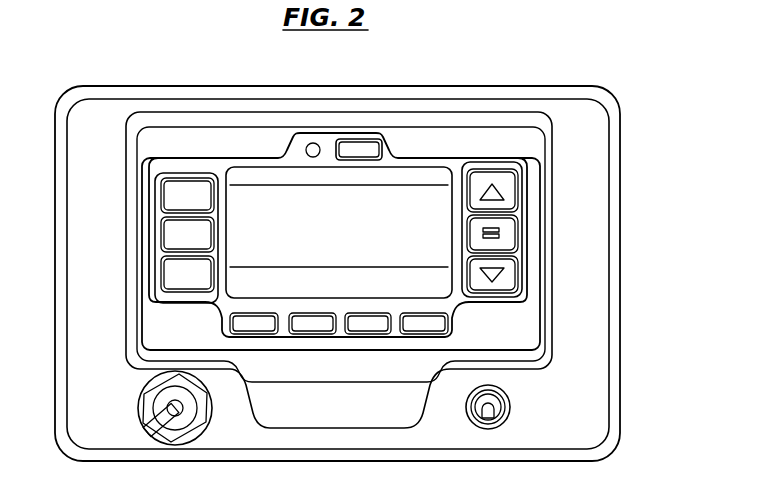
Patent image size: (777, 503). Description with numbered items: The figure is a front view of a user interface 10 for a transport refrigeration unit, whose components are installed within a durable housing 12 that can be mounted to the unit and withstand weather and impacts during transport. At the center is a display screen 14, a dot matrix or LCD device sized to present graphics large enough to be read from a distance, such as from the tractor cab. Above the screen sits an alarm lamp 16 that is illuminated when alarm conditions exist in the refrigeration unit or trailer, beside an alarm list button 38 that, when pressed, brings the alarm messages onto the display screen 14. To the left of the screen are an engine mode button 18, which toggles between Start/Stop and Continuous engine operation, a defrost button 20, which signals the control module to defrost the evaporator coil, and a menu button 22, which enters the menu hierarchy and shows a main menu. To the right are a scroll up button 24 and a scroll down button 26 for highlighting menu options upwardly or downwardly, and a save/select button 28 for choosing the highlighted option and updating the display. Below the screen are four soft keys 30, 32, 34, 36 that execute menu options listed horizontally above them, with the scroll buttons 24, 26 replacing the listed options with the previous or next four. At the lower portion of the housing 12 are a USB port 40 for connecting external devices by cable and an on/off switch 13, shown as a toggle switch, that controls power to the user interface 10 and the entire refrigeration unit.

The user interface 10 is at (541, 55).
The housing 12 is at (621, 377).
The on/off switch 13 is at (499, 411).
The display screen 14 is at (382, 166).
The alarm lamp 16 is at (310, 144).
The engine mode button 18 is at (167, 185).
The defrost button 20 is at (188, 225).
The menu button 22 is at (180, 262).
The scroll up button 24 is at (508, 193).
The scroll down button 26 is at (508, 275).
The save/select button 28 is at (508, 231).
The soft key 30 is at (263, 326).
The soft key 32 is at (320, 326).
The soft key 34 is at (378, 326).
The soft key 36 is at (430, 322).
The alarm list button 38 is at (352, 140).
The USB port 40 is at (175, 407).